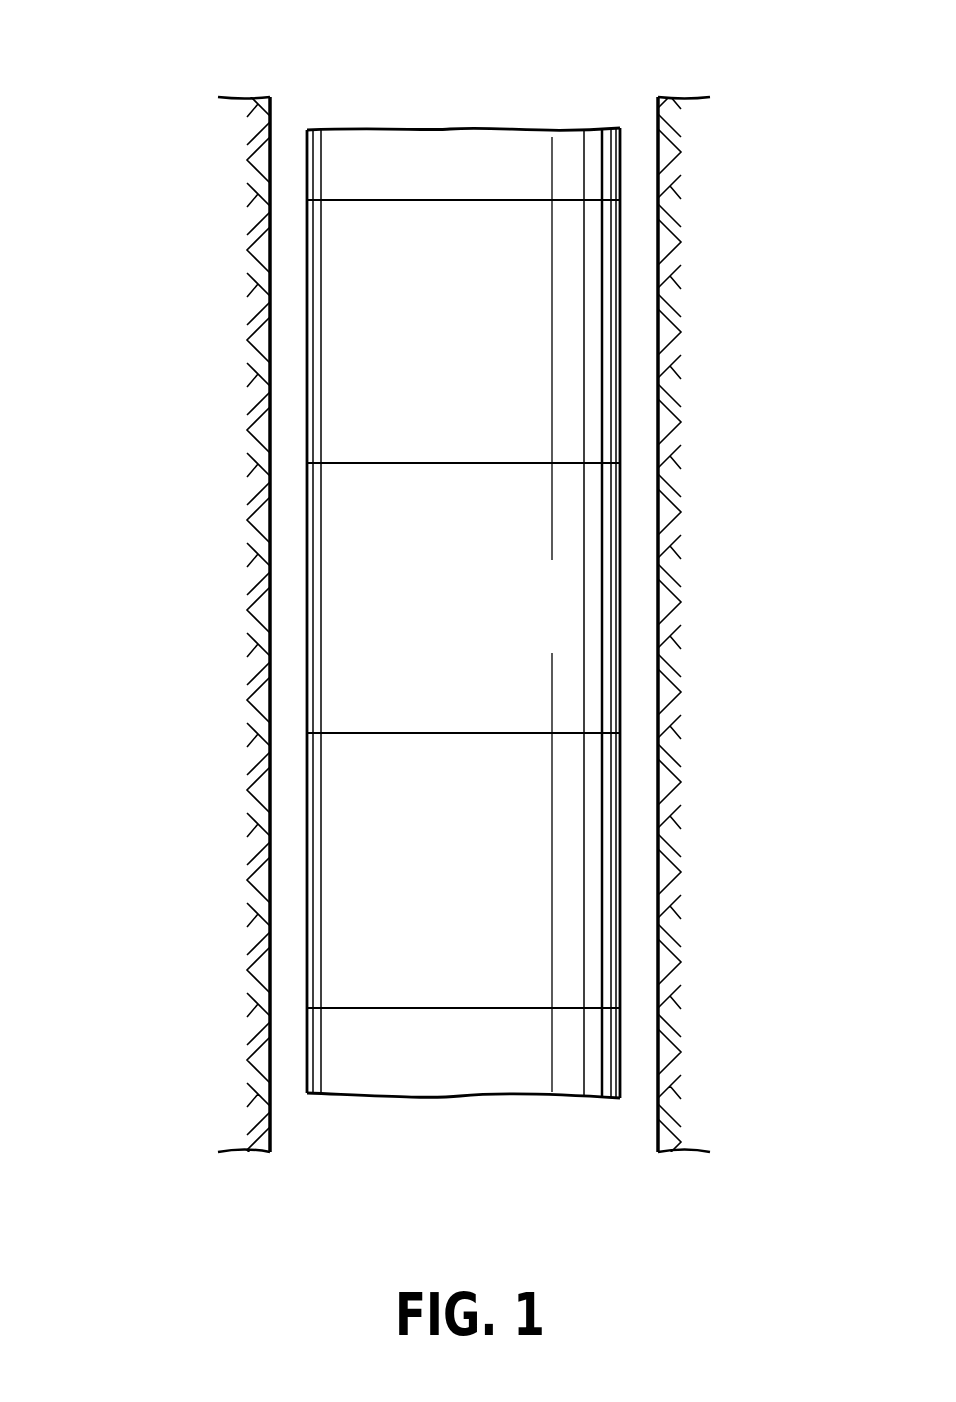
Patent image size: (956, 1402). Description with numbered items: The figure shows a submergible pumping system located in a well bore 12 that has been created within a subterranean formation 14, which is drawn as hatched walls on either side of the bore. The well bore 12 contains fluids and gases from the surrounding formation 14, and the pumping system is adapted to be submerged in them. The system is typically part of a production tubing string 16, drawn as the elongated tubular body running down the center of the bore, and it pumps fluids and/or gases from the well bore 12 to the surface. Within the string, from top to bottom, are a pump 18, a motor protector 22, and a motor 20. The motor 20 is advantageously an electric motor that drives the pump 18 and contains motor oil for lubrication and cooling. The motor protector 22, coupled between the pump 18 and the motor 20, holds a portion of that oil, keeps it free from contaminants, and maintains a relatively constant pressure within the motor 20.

The well bore 12 is at (289, 96).
The subterranean formation 14 is at (760, 522).
The production tubing string 16 is at (620, 172).
The pump 18 is at (328, 223).
The motor 20 is at (597, 796).
The motor protector 22 is at (328, 683).